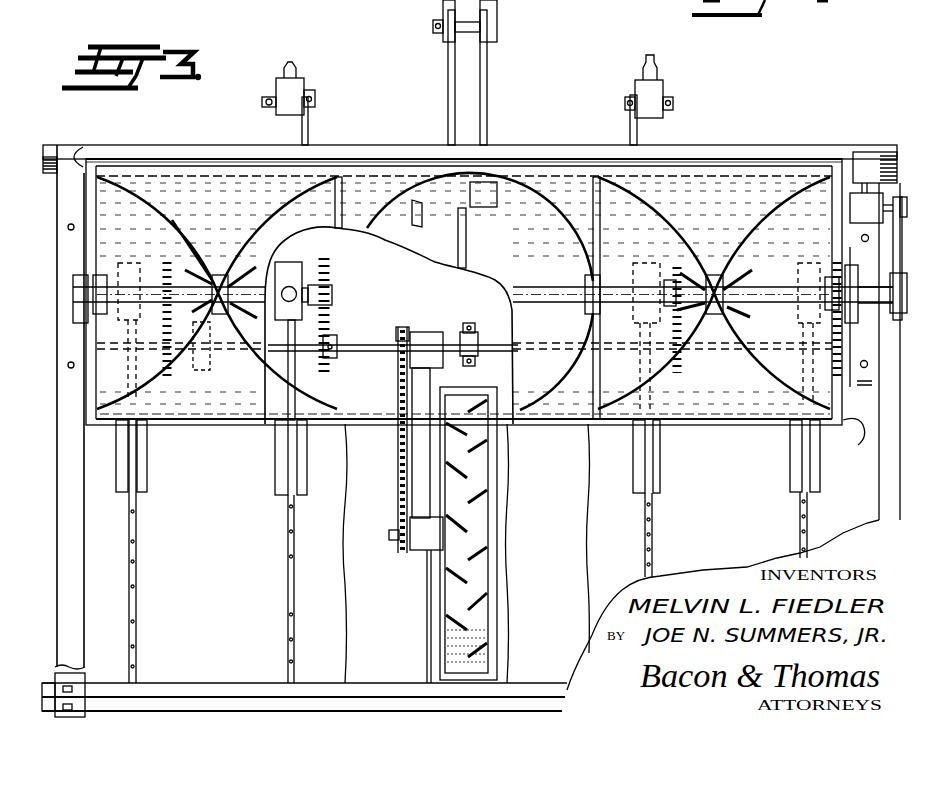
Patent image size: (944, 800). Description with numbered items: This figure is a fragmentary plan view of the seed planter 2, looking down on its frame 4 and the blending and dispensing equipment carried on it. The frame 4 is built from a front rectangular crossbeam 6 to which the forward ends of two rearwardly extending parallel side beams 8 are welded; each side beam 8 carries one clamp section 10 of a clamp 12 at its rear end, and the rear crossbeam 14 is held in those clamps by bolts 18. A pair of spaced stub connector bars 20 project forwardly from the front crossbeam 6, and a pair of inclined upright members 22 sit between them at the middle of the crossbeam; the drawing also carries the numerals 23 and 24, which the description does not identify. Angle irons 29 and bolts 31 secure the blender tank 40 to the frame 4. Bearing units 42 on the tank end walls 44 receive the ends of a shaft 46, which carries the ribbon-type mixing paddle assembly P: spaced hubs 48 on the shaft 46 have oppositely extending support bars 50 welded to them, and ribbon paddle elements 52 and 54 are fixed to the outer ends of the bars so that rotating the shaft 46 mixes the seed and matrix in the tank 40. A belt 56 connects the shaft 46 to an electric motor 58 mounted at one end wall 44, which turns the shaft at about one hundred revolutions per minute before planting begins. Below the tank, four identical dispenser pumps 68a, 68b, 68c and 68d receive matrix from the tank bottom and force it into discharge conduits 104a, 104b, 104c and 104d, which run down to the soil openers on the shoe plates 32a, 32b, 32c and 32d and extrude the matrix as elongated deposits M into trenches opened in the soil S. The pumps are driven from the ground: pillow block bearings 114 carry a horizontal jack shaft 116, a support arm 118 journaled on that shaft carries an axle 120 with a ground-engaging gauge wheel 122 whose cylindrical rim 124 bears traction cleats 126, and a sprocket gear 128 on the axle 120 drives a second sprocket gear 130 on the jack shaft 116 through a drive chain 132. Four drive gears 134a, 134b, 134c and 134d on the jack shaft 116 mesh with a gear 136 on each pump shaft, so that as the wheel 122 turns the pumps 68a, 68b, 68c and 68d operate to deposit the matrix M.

The seed planter 2 is at (733, 135).
The frame 4 is at (797, 150).
The front crossbeam 6 is at (376, 147).
The side beams 8 is at (62, 412).
The clamp section 10 is at (85, 680).
The clamp 12 is at (55, 675).
The rear crossbeam 14 is at (238, 690).
The bolts 18 is at (85, 689).
The stub connector bars 20 is at (310, 124).
The inclined upright members 22 is at (488, 92).
The hitch bracket 23 is at (497, 20).
The mounting bracket 24 is at (306, 98).
The angle irons 29 is at (58, 336).
The bolts 31 is at (68, 224).
The shoe plate 32a is at (137, 463).
The shoe plate 32b is at (288, 478).
The shoe plate 32c is at (660, 490).
The shoe plate 32d is at (800, 462).
The blender tank 40 is at (207, 158).
The bearing units 42 is at (74, 280).
The end walls 44 is at (80, 152).
The shaft 46 is at (517, 288).
The hubs 48 is at (102, 276).
The support bars 50 is at (150, 217).
The ribbon paddle elements 52 is at (140, 200).
The ribbon paddle elements 54 is at (188, 262).
The belt 56 is at (894, 322).
The electric motor 58 is at (865, 193).
The dispenser pump 68a is at (143, 272).
The dispenser pump 68b is at (303, 268).
The dispenser pump 68c is at (634, 265).
The dispenser pump 68d is at (792, 268).
The discharge conduit 104a is at (140, 440).
The discharge conduit 104b is at (297, 410).
The discharge conduit 104c is at (652, 455).
The discharge conduit 104d is at (800, 437).
The pillow block bearings 114 is at (210, 365).
The jack shaft 116 is at (346, 347).
The support arm 118 is at (400, 452).
The axle 120 is at (390, 540).
The gauge wheel 122 is at (488, 506).
The cylindrical rim 124 is at (447, 598).
The traction cleats 126 is at (475, 583).
The sprocket gear 128 is at (398, 508).
The second sprocket gear 130 is at (398, 352).
The drive chain 132 is at (397, 404).
The drive gear 134a is at (172, 378).
The drive gear 134b is at (333, 340).
The drive gear 134c is at (679, 370).
The drive gear 134d is at (832, 368).
The gear 136 is at (332, 289).
The elongated deposit M is at (135, 518).
The soil S is at (189, 607).
The ribbon-type mixing paddle assembly P is at (197, 224).